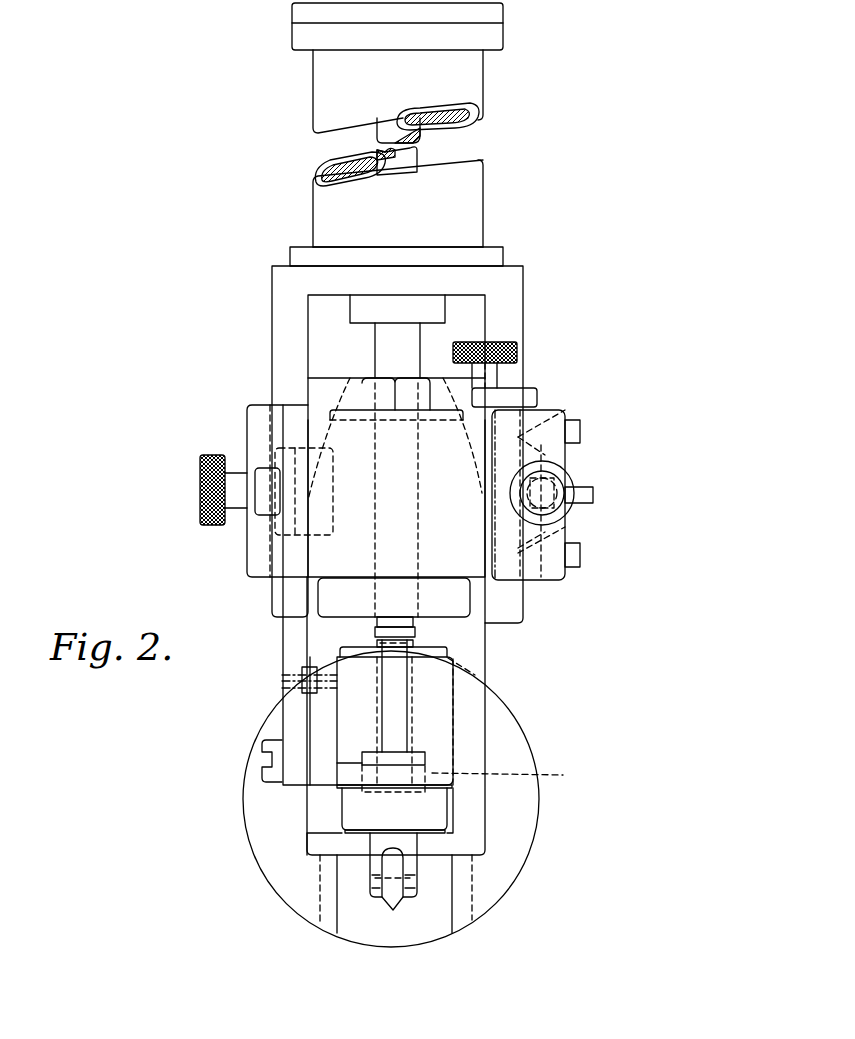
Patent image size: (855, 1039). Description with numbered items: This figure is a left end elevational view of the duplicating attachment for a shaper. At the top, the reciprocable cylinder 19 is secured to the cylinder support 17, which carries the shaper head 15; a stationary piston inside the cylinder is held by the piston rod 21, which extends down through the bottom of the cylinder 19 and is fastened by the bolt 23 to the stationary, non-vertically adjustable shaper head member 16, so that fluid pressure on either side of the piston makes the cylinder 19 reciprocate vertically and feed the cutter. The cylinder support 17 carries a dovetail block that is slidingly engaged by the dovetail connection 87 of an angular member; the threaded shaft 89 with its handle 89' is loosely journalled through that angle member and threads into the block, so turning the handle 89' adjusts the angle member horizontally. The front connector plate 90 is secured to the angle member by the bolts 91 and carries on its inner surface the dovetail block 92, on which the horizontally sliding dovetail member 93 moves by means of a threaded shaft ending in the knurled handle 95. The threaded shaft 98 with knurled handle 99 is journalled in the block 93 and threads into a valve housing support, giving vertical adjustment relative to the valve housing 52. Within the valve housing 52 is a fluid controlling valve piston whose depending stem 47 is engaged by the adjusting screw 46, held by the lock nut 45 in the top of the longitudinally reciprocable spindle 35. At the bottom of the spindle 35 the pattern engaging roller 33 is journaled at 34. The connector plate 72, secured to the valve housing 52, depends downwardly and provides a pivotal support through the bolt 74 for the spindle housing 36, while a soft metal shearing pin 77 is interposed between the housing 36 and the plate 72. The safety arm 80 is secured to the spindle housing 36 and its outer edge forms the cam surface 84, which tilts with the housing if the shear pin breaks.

The reciprocable cylinder 19 is at (468, 87).
The piston rod 21 is at (410, 162).
The cylinder support 17 is at (283, 323).
The knurled handle 99 is at (517, 345).
The threaded shaft 98 is at (490, 378).
The dovetail connection 87 is at (253, 414).
The threaded shaft 89 is at (197, 490).
The handle 89' is at (197, 490).
The valve housing 52 is at (316, 549).
The horizontally sliding dovetail member 93 is at (568, 413).
The bolts 91 is at (580, 433).
The dovetail block 92 is at (578, 450).
The knurled handle 95 is at (578, 488).
The front connector plate 90 is at (557, 532).
The depending stem 47 is at (403, 622).
The adjusting screw 46 is at (418, 632).
The lock nut 45 is at (420, 646).
The connector plate 72 is at (288, 637).
The shearing pin 77 is at (298, 676).
The cam surface 84 is at (400, 708).
The safety arm 80 is at (383, 718).
The bolt 74 is at (270, 758).
The bolt 23 is at (419, 799).
The spindle housing 36 is at (353, 810).
The shaper head 15 is at (468, 822).
The spindle 35 is at (367, 840).
The journal 34 is at (405, 885).
The shaper head member 16 is at (498, 875).
The pattern engaging roller 33 is at (393, 903).